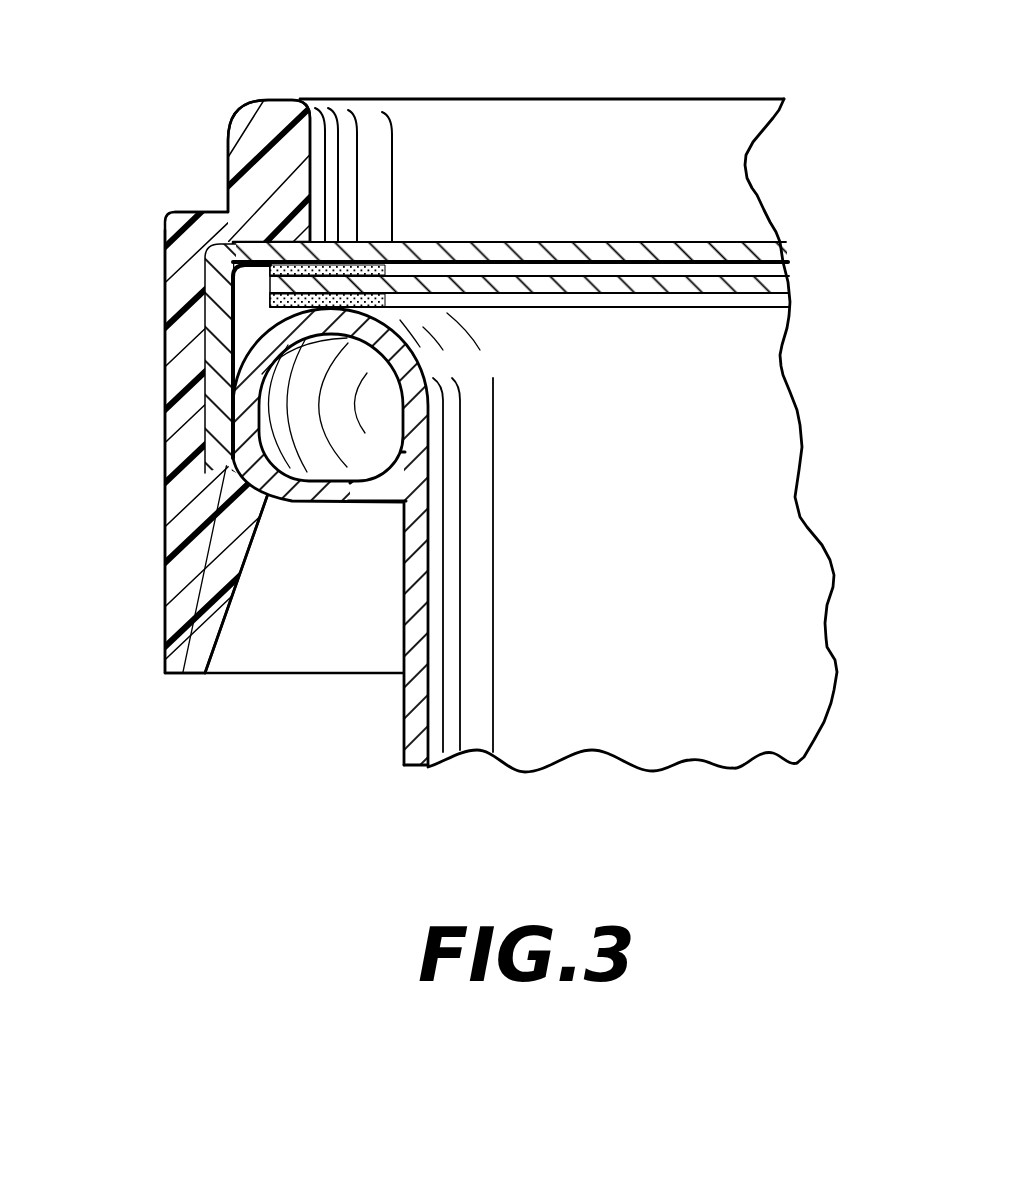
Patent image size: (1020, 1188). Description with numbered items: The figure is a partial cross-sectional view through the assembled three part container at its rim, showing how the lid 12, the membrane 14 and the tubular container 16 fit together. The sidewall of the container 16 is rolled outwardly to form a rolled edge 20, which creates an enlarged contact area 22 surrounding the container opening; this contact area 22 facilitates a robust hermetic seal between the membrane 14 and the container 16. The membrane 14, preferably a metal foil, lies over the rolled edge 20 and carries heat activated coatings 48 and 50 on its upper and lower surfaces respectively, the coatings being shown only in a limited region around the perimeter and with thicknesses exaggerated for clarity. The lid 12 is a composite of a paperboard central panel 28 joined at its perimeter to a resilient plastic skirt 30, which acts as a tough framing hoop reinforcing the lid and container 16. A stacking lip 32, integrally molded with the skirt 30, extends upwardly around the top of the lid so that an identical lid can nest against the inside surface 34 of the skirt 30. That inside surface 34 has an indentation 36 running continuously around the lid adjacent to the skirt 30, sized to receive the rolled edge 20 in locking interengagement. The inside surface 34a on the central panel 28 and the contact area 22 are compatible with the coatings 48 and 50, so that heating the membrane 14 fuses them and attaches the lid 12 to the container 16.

The lid 12 is at (195, 252).
The membrane 14 is at (737, 295).
The tubular container 16 is at (702, 616).
The rolled edge 20 is at (323, 503).
The contact area 22 is at (262, 378).
The central panel 28 is at (733, 245).
The plastic skirt 30 is at (178, 622).
The stacking lip 32 is at (287, 115).
The inside surface 34 is at (247, 553).
The inside surface on the central panel 34a is at (257, 237).
The indentation 36 is at (254, 312).
The heat activated coating 48 is at (355, 266).
The heat activated coating 50 is at (395, 305).